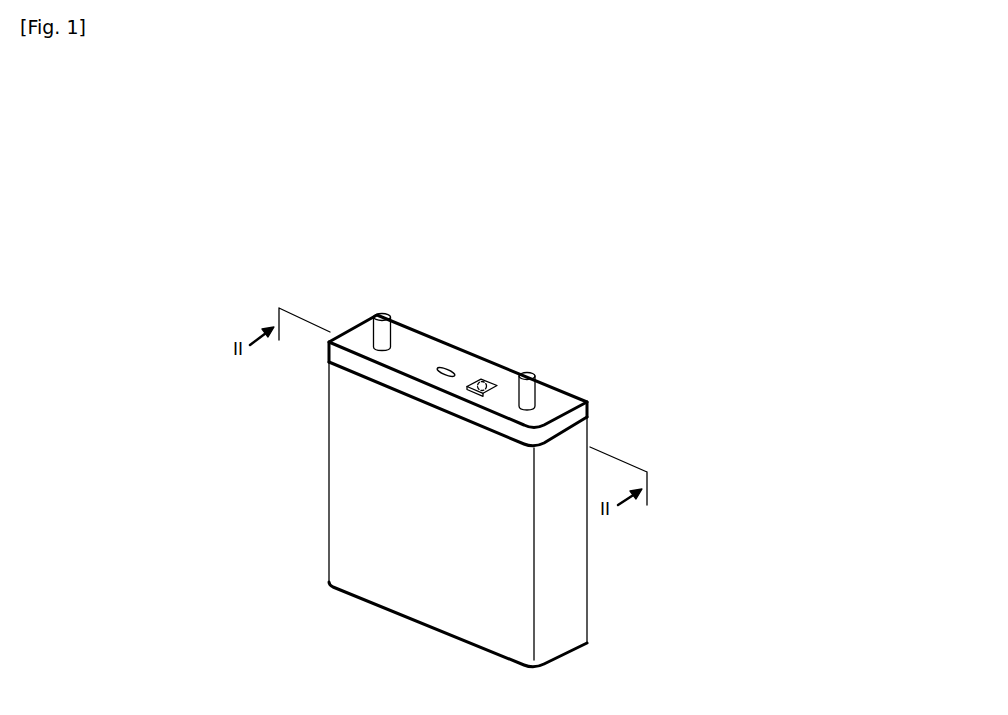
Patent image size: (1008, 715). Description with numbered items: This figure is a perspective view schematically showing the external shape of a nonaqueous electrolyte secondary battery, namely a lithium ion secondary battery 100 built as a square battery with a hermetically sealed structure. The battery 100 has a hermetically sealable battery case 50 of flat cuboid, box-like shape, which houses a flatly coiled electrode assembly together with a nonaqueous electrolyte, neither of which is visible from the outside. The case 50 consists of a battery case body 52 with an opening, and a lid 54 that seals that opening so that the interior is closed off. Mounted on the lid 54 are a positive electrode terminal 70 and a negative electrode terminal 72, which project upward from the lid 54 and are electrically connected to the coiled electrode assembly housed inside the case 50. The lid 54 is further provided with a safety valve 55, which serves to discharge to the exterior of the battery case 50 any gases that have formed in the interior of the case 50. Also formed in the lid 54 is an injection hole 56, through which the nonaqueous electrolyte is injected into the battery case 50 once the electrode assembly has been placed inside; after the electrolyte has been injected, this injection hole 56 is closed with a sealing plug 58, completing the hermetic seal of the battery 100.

The lithium ion secondary battery 100 is at (547, 445).
The battery case 50 is at (509, 500).
The battery case body 52 is at (578, 610).
The lid 54 is at (588, 410).
The safety valve 55 is at (447, 363).
The injection hole 56 is at (485, 375).
The sealing plug 58 is at (503, 324).
The positive electrode terminal 70 is at (384, 314).
The negative electrode terminal 72 is at (527, 372).